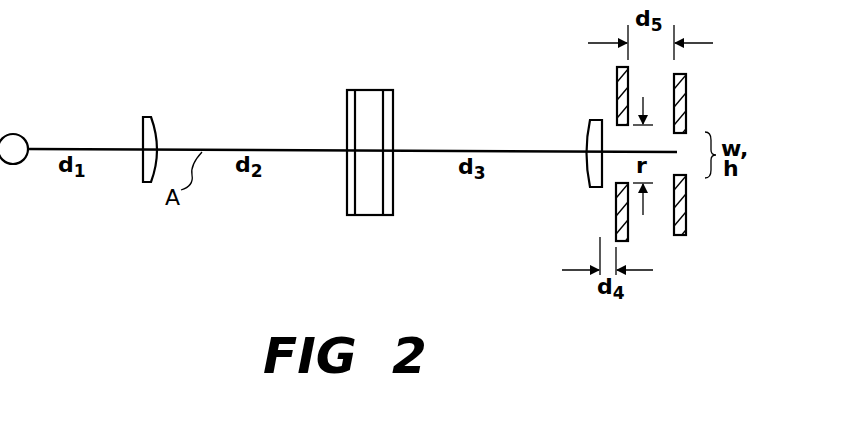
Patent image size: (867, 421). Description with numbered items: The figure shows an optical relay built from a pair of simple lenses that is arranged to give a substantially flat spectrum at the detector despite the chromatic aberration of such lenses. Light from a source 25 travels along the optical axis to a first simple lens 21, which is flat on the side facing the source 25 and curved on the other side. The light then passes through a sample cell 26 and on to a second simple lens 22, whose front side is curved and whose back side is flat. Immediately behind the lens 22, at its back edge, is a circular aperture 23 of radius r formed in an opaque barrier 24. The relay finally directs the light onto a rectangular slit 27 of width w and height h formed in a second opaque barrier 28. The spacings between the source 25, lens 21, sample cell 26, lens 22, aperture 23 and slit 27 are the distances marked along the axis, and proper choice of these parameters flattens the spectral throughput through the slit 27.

The first simple lens 21 is at (152, 118).
The second simple lens 22 is at (590, 137).
The aperture 23 is at (618, 137).
The opaque barrier 24 is at (616, 212).
The source 25 is at (22, 137).
The sample cell 26 is at (377, 90).
The slit 27 is at (682, 143).
The opaque barrier 28 is at (686, 206).